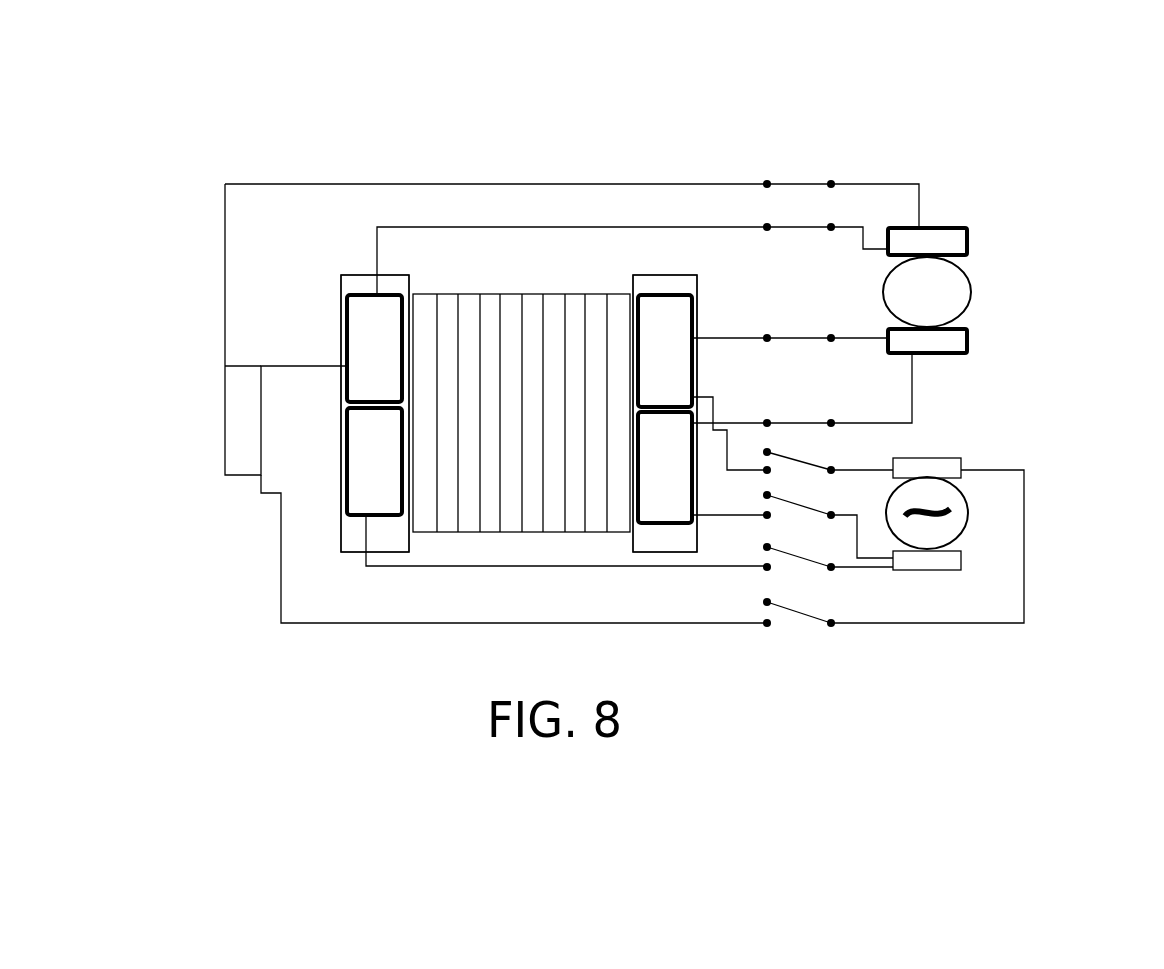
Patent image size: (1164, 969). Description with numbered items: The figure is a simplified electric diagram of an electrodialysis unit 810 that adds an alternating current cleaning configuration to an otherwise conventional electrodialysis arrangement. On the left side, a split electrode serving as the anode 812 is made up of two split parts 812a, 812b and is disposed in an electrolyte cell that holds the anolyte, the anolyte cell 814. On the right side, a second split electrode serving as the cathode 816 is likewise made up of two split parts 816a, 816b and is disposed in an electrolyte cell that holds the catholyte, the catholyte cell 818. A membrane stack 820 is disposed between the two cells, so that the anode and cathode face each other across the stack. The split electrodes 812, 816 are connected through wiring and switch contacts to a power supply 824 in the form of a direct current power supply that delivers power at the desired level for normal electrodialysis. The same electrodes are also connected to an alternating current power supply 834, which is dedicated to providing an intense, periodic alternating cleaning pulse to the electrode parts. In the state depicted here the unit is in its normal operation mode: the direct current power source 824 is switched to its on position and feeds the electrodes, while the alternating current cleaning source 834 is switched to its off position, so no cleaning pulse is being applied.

The electrodialysis unit 810 is at (1050, 173).
The split electrode (anode) 812 is at (362, 290).
The split part of the anode 812a is at (347, 325).
The split part of the anode 812b is at (348, 458).
The electrolyte (anolyte) cell 814 is at (353, 533).
The split electrode (cathode) 816 is at (667, 290).
The split part of the cathode 816a is at (693, 319).
The split part of the cathode 816b is at (690, 438).
The electrolyte (catholyte) cell 818 is at (650, 532).
The membrane stack 820 is at (523, 290).
The power supply (DC power source) 824 is at (971, 286).
The AC power supply (AC cleaning source) 834 is at (966, 512).